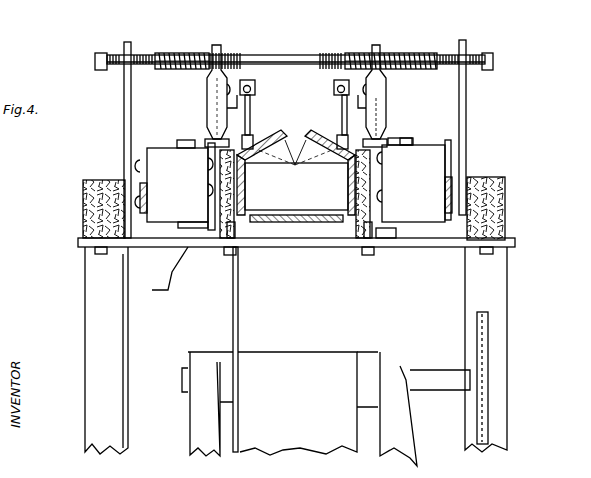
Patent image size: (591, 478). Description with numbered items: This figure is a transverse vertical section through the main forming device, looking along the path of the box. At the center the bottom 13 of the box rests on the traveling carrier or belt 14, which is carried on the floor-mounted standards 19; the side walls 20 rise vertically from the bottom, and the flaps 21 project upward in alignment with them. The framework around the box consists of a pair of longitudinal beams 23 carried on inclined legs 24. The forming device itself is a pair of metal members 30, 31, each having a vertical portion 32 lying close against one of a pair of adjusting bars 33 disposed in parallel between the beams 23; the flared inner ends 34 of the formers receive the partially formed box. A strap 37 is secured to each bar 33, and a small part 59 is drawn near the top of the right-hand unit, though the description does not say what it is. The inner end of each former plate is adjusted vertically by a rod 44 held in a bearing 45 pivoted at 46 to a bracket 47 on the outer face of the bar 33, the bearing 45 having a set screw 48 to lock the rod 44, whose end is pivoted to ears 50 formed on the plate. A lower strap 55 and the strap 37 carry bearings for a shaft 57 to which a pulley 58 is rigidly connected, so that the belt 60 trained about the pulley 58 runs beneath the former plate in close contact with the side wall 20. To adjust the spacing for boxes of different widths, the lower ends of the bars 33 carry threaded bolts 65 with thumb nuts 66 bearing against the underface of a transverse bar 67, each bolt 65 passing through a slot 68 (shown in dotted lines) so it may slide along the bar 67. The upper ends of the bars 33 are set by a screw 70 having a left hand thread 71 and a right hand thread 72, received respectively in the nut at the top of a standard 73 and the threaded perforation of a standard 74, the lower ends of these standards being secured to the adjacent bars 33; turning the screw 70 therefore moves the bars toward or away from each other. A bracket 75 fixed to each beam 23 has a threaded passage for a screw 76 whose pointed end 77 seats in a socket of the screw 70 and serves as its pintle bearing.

The bottom 13 is at (304, 192).
The traveling carrier or belt 14 is at (343, 222).
The standards 19 is at (295, 161).
The side walls 20 is at (246, 204).
The flaps 21 is at (288, 138).
The longitudinal beams 23 is at (83, 214).
The inclined legs 24 is at (128, 352).
The metal member (former plate) 30 is at (256, 134).
The metal member (former plate) 31 is at (337, 138).
The vertical portion 32 is at (440, 170).
The adjusting bars 33 is at (206, 170).
The inner ends of the formers 34 is at (580, 258).
The strap 37 is at (177, 140).
The rod 44 is at (255, 108).
The bearing 45 is at (256, 84).
The pivot 46 is at (229, 86).
The bracket 47 is at (227, 110).
The set screw 48 is at (246, 53).
The ears 50 is at (378, 140).
The strap 55 is at (178, 240).
The shaft 57 is at (388, 247).
The pulley 58 is at (154, 150).
The cap 59 is at (414, 142).
The belt 60 is at (140, 172).
The threaded bolts 65 is at (236, 256).
The thumb nuts 66 is at (228, 256).
The transverse bar 67 is at (164, 275).
The slot 68 is at (352, 247).
The screw 70 is at (280, 55).
The left hand thread 71 is at (190, 53).
The right hand thread 72 is at (398, 53).
The standard 73 is at (208, 96).
The standard 74 is at (387, 96).
The bracket 75 is at (124, 102).
The screw 76 is at (140, 55).
The pointed end 77 is at (156, 58).